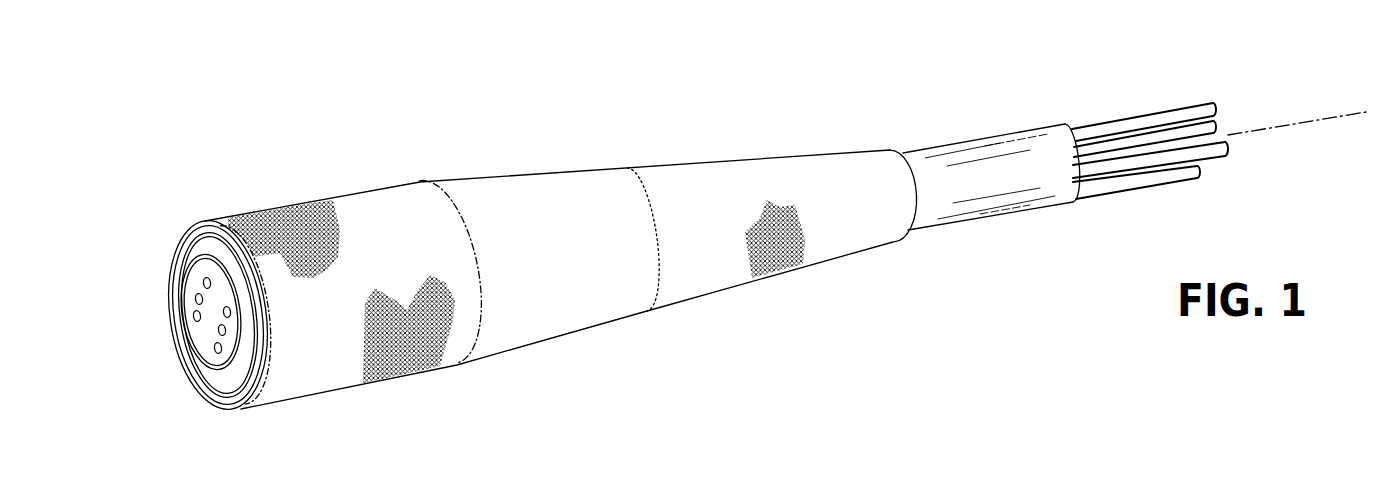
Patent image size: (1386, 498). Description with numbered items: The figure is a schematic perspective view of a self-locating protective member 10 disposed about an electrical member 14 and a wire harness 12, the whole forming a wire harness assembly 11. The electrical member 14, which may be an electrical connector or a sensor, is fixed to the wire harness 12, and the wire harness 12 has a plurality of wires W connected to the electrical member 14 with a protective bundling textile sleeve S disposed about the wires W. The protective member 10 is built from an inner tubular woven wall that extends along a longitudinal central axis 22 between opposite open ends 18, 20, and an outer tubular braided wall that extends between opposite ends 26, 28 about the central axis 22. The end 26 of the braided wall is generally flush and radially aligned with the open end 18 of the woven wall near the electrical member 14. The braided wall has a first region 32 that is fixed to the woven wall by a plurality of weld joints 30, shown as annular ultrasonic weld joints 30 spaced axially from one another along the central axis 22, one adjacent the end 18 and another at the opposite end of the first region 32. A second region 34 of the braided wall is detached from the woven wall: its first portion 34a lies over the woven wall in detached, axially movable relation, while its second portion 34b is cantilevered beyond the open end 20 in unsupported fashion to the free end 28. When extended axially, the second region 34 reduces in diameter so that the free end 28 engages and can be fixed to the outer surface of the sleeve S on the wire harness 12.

The self-locating protective member 10 is at (211, 144).
The wire harness assembly 11 is at (958, 50).
The wire harness 12 is at (1008, 145).
The electrical member 14 is at (195, 279).
The open end 18 is at (212, 392).
The open end 20 is at (654, 212).
The longitudinal central axis 22 is at (1277, 128).
The end of braided wall 26 is at (178, 234).
The free end of braided wall 28 is at (895, 147).
The weld joints 30 is at (297, 197).
The first region of braided wall 32 is at (455, 383).
The second region of braided wall 34 is at (940, 338).
The first portion of second region 34a is at (650, 341).
The second portion of second region 34b is at (925, 286).
The protective bundling textile sleeve S is at (967, 192).
The wires W is at (1144, 128).